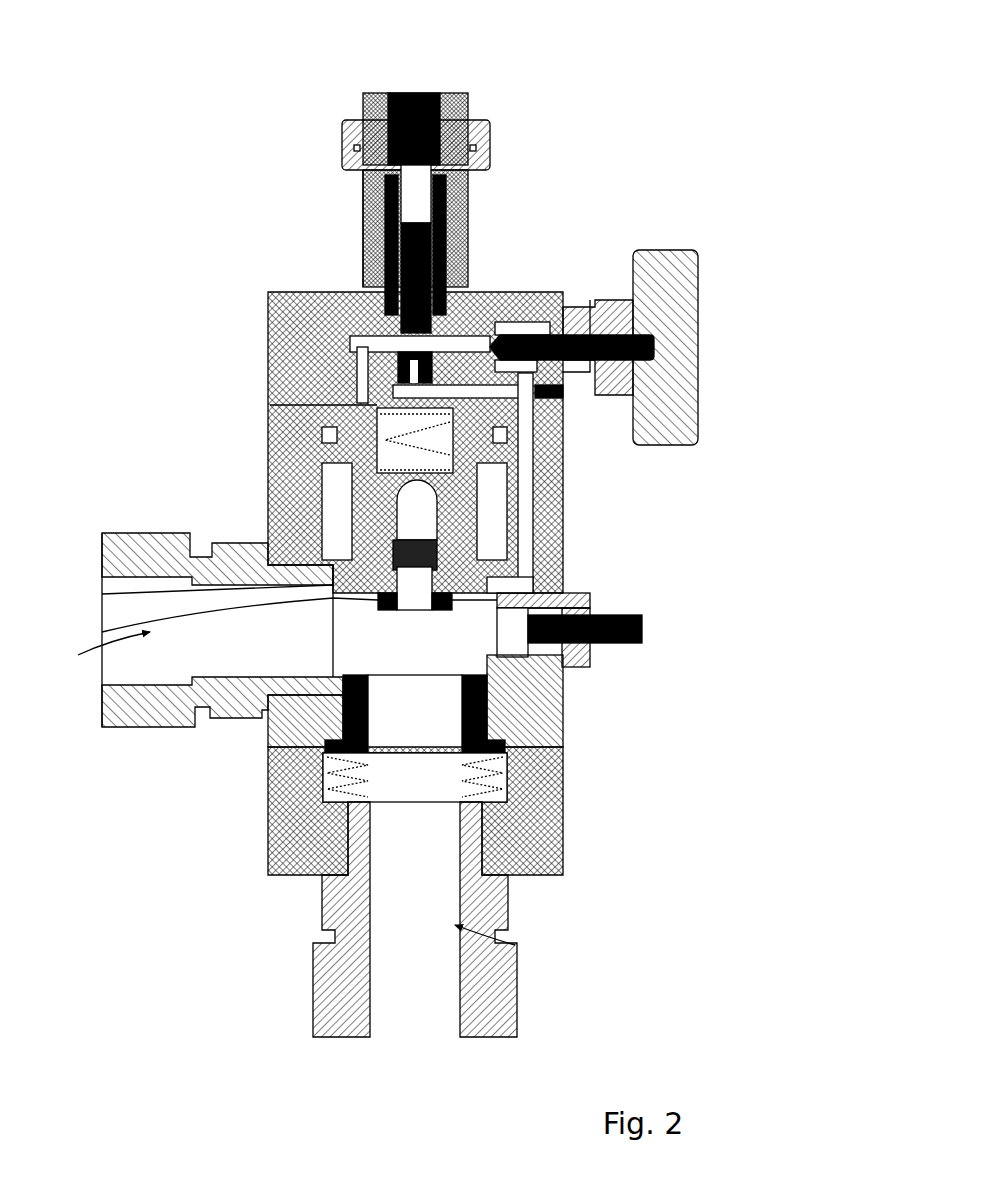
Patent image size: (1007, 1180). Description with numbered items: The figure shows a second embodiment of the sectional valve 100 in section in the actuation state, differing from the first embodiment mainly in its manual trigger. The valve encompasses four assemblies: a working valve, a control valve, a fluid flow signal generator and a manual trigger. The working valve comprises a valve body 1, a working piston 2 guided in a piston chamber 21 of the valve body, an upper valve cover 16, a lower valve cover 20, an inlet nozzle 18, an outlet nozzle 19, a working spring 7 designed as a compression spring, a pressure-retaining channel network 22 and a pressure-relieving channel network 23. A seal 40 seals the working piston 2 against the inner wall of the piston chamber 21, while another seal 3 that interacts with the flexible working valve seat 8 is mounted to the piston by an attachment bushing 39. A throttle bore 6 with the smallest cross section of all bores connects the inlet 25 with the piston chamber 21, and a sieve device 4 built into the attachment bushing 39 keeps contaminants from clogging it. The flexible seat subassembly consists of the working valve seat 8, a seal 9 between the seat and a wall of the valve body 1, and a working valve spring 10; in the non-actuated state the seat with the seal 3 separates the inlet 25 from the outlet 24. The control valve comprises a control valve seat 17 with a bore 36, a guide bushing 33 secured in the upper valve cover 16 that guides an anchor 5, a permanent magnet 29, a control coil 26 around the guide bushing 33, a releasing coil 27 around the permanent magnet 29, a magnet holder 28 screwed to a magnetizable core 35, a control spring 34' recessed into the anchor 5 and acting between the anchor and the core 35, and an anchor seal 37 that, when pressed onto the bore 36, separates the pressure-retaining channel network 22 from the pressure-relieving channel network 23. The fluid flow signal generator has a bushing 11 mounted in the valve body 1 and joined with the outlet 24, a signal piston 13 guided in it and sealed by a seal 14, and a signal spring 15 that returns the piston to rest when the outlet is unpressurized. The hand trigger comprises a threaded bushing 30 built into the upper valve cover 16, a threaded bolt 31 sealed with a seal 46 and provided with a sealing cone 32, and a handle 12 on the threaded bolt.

The sectional valve 100 is at (422, 526).
The valve body 1 is at (408, 442).
The working piston 2 is at (330, 470).
The seal 3 is at (102, 597).
The sieve device 4 is at (445, 555).
The anchor 5 is at (366, 253).
The throttle bore 6 is at (430, 480).
The working spring 7 is at (395, 397).
The working valve seat 8 is at (520, 730).
The seal 9 is at (545, 685).
The working valve spring 10 is at (500, 757).
The bushing 11 is at (590, 655).
The handle 12 is at (700, 278).
The signal piston 13 is at (645, 630).
The seal 14 is at (545, 596).
The signal spring 15 is at (592, 612).
The upper valve cover 16 is at (275, 300).
The control valve seat 17 is at (397, 352).
The inlet nozzle 18 is at (512, 903).
The outlet nozzle 19 is at (140, 533).
The lower valve cover 20 is at (565, 815).
The piston chamber 21 is at (325, 497).
The pressure-retaining channel network 22 is at (360, 368).
The pressure-relieving channel network 23 is at (545, 455).
The outlet 24 is at (48, 667).
The inlet 25 is at (545, 960).
The control coil 26 is at (468, 215).
The releasing coil 27 is at (468, 100).
The magnet holder 28 is at (490, 140).
The permanent magnet 29 is at (365, 135).
The threaded bushing 30 is at (580, 300).
The threaded bolt 31 is at (652, 348).
The sealing cone 32 is at (505, 320).
The guide bushing 33 is at (468, 185).
The control spring 34' is at (475, 245).
The magnetizable core 35 is at (368, 178).
The bore 36 is at (540, 395).
The anchor seal 37 is at (403, 330).
The attachment bushing 39 is at (102, 627).
The seal 40 is at (322, 435).
The seal 46 is at (592, 312).